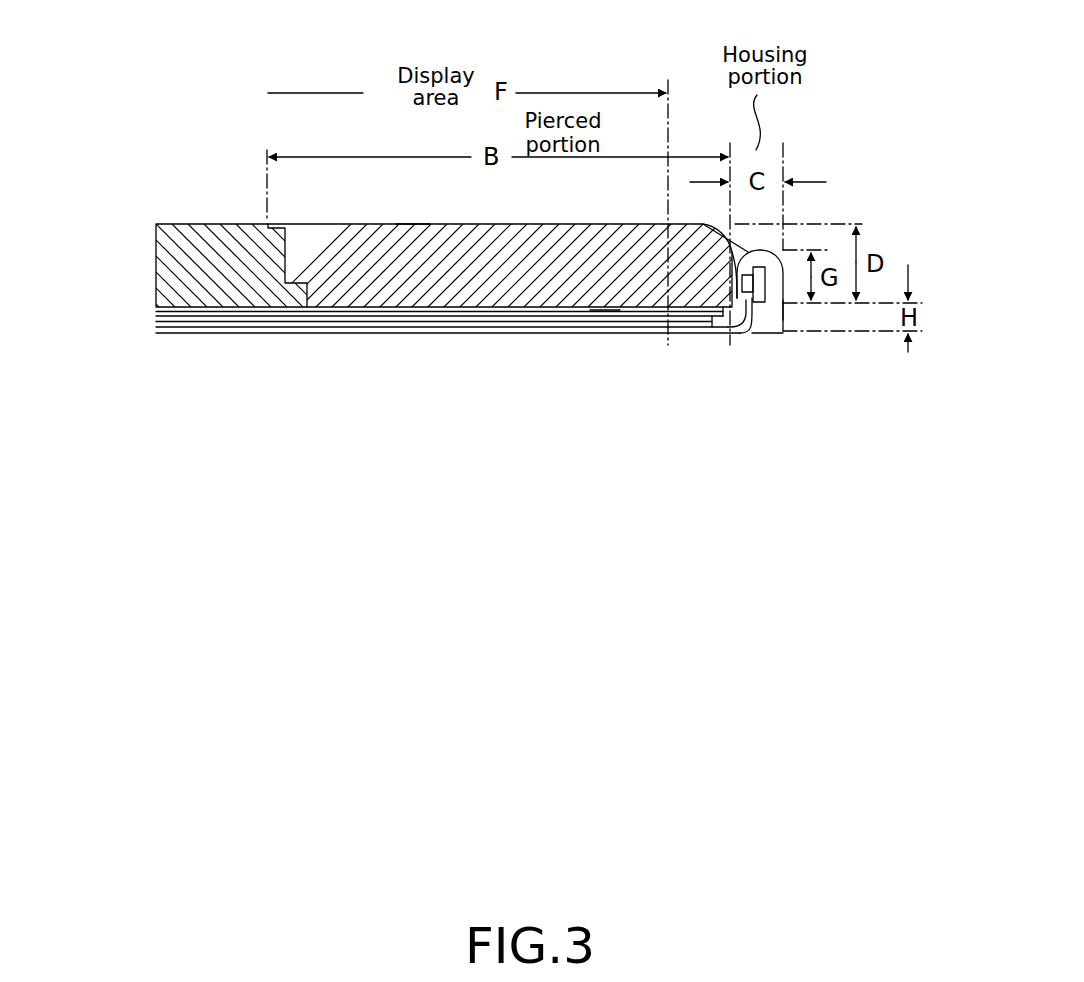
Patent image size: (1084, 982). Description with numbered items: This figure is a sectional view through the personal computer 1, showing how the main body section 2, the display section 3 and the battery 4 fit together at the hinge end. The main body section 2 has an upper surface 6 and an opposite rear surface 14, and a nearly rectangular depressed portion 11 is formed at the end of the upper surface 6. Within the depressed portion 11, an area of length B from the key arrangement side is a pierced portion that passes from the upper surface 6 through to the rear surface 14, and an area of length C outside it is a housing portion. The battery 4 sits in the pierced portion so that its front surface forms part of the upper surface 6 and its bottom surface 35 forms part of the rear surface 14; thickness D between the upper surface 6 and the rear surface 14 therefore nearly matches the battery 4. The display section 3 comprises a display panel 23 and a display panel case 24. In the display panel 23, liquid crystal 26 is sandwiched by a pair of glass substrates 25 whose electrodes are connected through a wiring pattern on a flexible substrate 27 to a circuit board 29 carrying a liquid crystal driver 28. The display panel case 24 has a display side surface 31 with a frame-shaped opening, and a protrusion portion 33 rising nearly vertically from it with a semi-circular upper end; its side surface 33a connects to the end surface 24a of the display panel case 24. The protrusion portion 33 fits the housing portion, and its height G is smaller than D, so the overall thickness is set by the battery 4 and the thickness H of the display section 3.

The personal computer 1 is at (219, 98).
The main body section 2 is at (183, 212).
The display section 3 is at (278, 344).
The battery 4 is at (364, 240).
The upper surface 6 is at (222, 310).
The depressed portion 11 is at (546, 246).
The rear surface 14 is at (252, 222).
The display panel 23 is at (148, 308).
The display panel case 24 is at (750, 334).
The end surface 24a is at (768, 306).
The glass substrates 25 is at (450, 332).
The liquid crystal 26 is at (360, 322).
The flexible substrate 27 is at (740, 300).
The liquid crystal driver 28 is at (738, 246).
The circuit board 29 is at (759, 303).
The display side surface 31 is at (600, 308).
The protrusion portion 33 is at (786, 250).
The side surface 33a is at (786, 308).
The bottom surface 35 is at (413, 222).